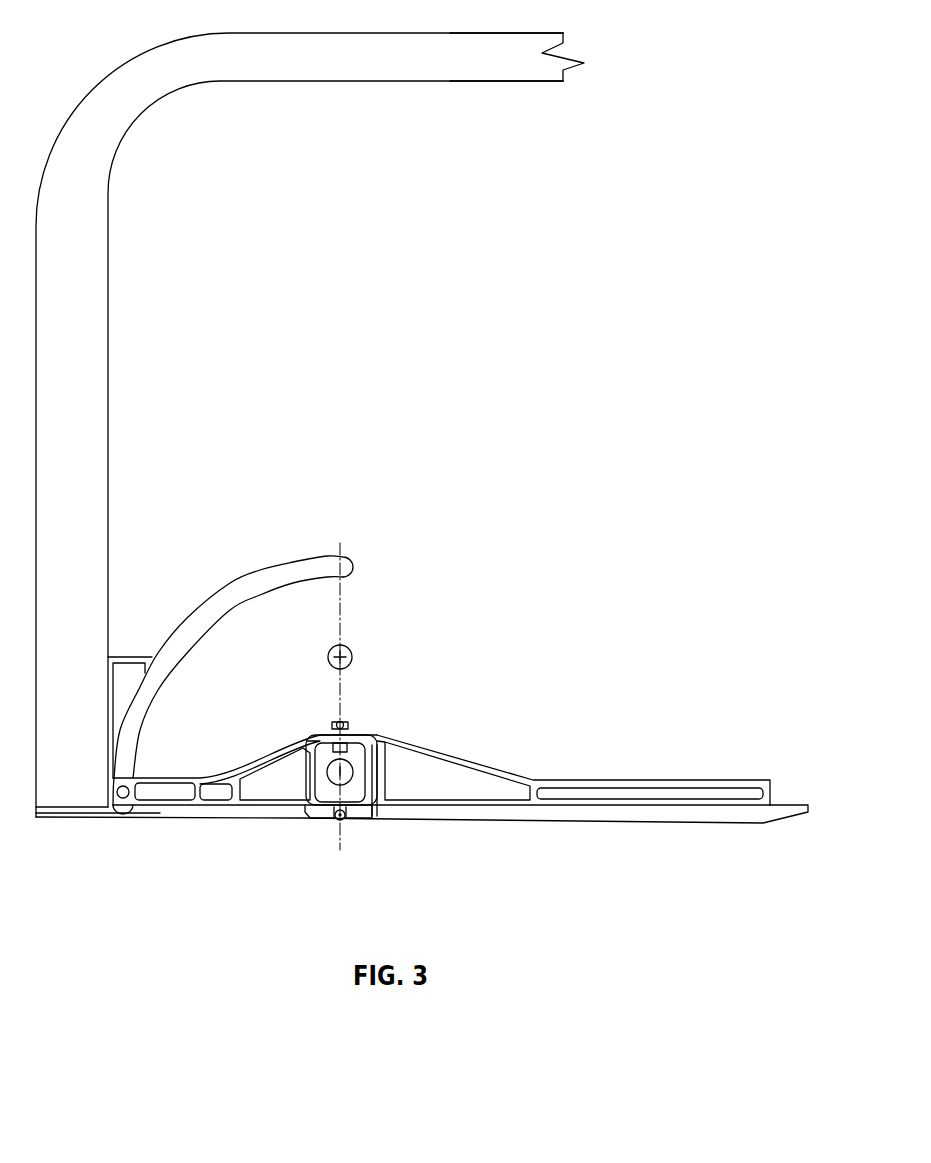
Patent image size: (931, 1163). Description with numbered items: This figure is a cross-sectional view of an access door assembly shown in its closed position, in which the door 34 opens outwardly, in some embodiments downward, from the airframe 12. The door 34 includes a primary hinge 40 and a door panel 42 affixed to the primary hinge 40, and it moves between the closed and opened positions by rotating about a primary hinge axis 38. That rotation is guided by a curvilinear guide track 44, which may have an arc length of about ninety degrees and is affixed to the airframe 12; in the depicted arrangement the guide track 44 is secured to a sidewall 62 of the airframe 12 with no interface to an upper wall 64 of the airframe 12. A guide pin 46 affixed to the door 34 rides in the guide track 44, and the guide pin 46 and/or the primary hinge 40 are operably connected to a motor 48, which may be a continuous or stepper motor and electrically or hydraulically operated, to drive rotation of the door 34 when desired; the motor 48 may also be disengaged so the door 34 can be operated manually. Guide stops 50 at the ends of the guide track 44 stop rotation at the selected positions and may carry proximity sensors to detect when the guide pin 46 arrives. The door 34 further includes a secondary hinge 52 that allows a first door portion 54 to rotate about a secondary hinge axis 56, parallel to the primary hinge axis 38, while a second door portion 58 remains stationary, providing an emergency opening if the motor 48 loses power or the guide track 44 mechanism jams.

The airframe 12 is at (103, 96).
The door 34 is at (552, 870).
The primary hinge axis 38 is at (320, 768).
The primary hinge 40 is at (353, 772).
The door panel 42 is at (592, 823).
The guide track 44 is at (184, 622).
The guide pin 46 is at (117, 790).
The motor 48 is at (349, 727).
The guide stops 50 is at (351, 561).
The secondary hinge 52 is at (335, 820).
The first door portion 54 is at (775, 824).
The secondary hinge axis 56 is at (348, 820).
The second door portion 58 is at (235, 823).
The sidewall 62 is at (98, 252).
The upper wall 64 is at (503, 82).